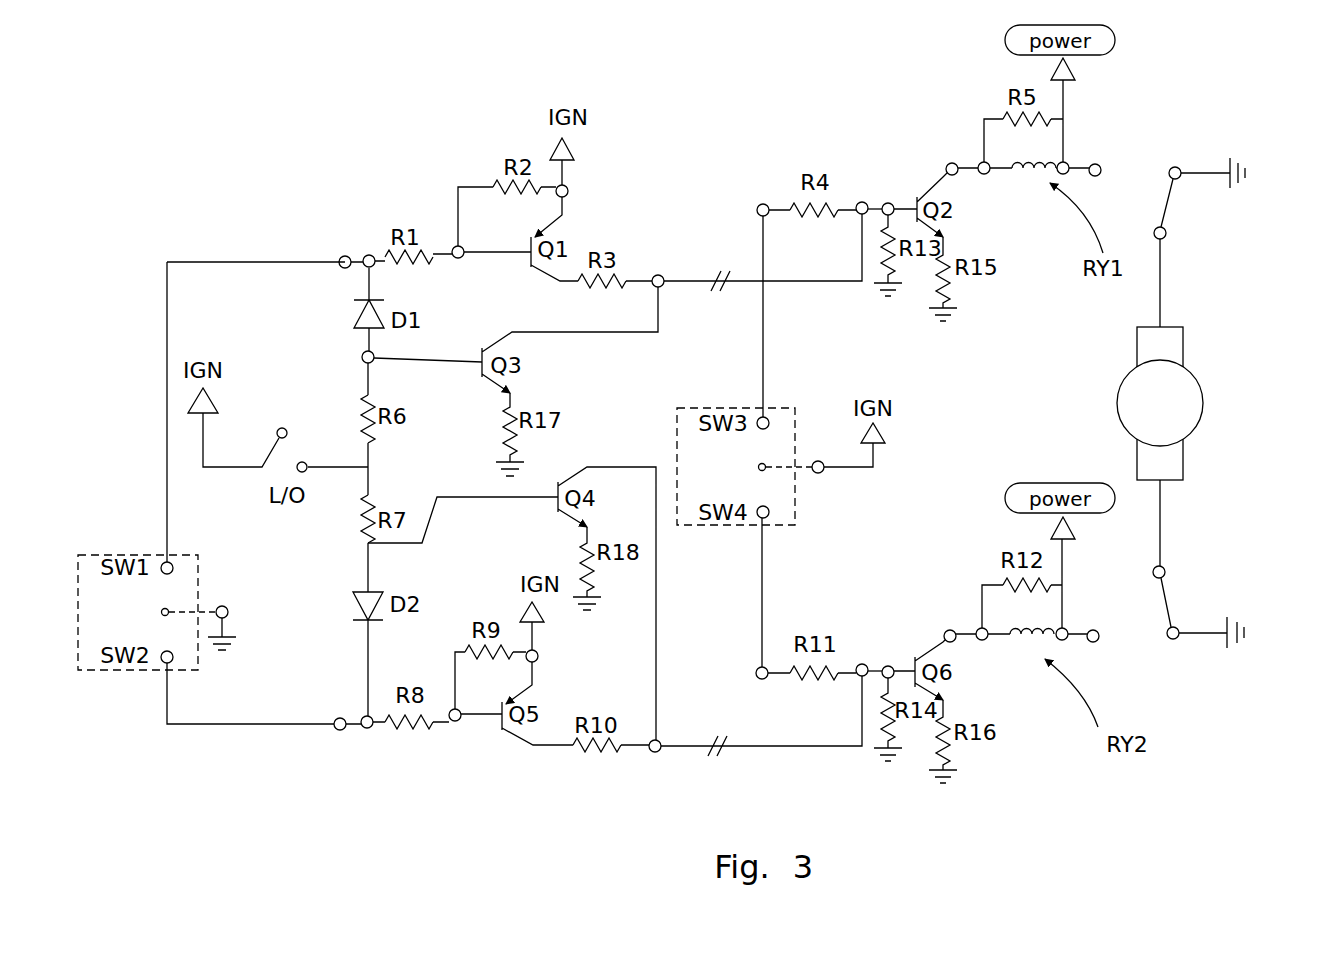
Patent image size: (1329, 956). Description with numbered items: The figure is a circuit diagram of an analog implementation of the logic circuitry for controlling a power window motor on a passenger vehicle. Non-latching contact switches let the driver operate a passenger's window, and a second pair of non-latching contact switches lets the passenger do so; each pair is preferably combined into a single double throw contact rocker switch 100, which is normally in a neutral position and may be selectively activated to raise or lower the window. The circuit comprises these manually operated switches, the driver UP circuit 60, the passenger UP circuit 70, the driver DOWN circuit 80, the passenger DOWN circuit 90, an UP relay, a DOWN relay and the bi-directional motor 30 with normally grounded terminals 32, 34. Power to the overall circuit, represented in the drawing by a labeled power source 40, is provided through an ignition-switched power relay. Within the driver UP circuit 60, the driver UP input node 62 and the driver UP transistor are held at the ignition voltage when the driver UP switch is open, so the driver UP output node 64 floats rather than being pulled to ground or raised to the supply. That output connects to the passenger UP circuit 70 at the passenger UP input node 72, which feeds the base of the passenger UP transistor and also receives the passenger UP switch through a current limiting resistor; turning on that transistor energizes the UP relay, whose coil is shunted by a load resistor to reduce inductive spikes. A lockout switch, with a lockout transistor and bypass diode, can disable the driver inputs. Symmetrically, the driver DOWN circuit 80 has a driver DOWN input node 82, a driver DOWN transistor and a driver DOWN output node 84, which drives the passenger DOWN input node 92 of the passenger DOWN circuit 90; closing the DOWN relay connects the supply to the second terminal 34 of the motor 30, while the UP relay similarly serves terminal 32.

The bi-directional motor 30 is at (1208, 383).
The first motor terminal 32 is at (1169, 229).
The second motor terminal 34 is at (1166, 562).
The power source 40 is at (1120, 38).
The driver UP circuit 60 is at (505, 100).
The driver UP input node 62 is at (371, 250).
The driver UP output node 64 is at (656, 272).
The passenger UP circuit 70 is at (834, 118).
The passenger UP input node 72 is at (863, 197).
The driver DOWN circuit 80 is at (478, 724).
The driver DOWN input node 82 is at (372, 730).
The driver DOWN output node 84 is at (661, 753).
The passenger DOWN circuit 90 is at (906, 796).
The passenger DOWN input node 92 is at (862, 650).
The double throw contact rocker switch 100 is at (199, 572).